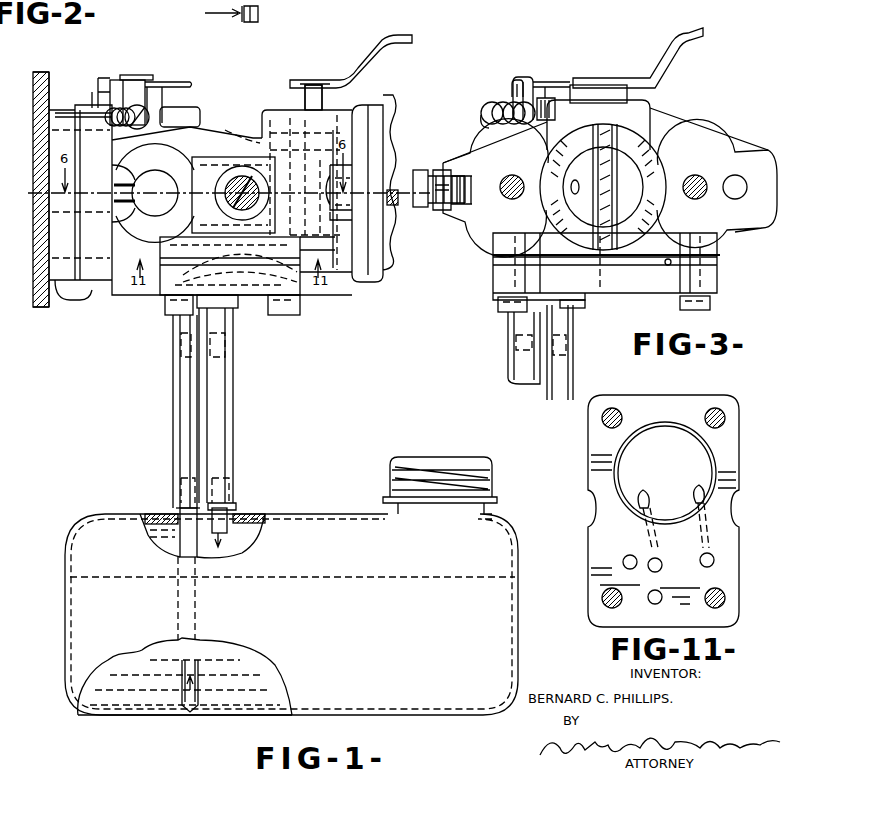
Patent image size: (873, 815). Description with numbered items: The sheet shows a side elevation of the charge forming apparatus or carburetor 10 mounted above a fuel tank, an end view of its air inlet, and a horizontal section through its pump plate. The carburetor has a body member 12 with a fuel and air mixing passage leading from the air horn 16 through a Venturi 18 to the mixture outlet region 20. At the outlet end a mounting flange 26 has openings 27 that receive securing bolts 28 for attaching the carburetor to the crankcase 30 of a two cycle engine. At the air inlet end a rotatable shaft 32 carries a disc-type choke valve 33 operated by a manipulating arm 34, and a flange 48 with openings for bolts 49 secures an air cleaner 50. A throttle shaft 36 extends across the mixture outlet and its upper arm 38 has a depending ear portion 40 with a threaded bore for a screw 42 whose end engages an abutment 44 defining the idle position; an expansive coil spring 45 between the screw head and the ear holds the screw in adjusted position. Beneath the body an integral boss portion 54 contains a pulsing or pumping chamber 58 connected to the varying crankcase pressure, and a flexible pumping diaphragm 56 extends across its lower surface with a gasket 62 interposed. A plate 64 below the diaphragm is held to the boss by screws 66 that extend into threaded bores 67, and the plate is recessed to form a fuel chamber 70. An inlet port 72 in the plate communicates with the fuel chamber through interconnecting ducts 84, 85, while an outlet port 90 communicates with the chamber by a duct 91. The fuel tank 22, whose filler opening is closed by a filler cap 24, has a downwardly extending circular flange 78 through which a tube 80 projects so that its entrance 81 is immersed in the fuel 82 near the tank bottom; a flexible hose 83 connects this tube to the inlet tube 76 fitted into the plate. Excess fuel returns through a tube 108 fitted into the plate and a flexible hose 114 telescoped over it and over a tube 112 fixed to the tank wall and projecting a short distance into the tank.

In FIG. 1, the charge forming apparatus or carburetor 10 is at (213, 126).
In FIG. 3, the charge forming apparatus or carburetor 10 is at (673, 98).
In FIG. 1, the body member 12 is at (268, 110).
In FIG. 3, the body member 12 is at (640, 100).
In FIG. 1, the air inlet portion or air horn 16 is at (298, 140).
In FIG. 1, the Venturi 18 is at (255, 135).
In FIG. 1, the mixture outlet region 20 is at (180, 117).
In FIG. 1, the fuel tank or receptacle 22 is at (325, 502).
In FIG. 1, the filler cap 24 is at (392, 462).
In FIG. 1, the mounting flange 26 is at (90, 300).
In FIG. 3, the mounting flange 26 is at (770, 160).
In FIG. 1, the openings 27 is at (110, 183).
In FIG. 3, the openings 27 is at (740, 196).
In FIG. 1, the securing bolts 28 is at (112, 212).
In FIG. 1, the crankcase 30 is at (33, 107).
In FIG. 1, the rotatable shaft 32 is at (325, 97).
In FIG. 3, the rotatable shaft 32 is at (572, 75).
In FIG. 3, the choke valve 33 is at (607, 190).
In FIG. 1, the manipulating arm or member 34 is at (375, 52).
In FIG. 3, the manipulating arm or member 34 is at (658, 56).
In FIG. 1, the throttle shaft 36 is at (135, 76).
In FIG. 1, the arm or member 38 is at (163, 82).
In FIG. 3, the arm or member 38 is at (520, 76).
In FIG. 1, the depending ear portion 40 is at (98, 86).
In FIG. 3, the depending ear portion 40 is at (512, 84).
In FIG. 1, the screw 42 is at (150, 118).
In FIG. 3, the screw 42 is at (485, 122).
In FIG. 3, the abutment 44 is at (546, 97).
In FIG. 1, the expansive coil spring 45 is at (108, 110).
In FIG. 3, the expansive coil spring 45 is at (490, 104).
In FIG. 1, the flange 48 is at (365, 143).
In FIG. 3, the flange 48 is at (660, 135).
In FIG. 1, the bolts 49 is at (395, 172).
In FIG. 3, the bolts 49 is at (700, 176).
In FIG. 1, the air cleaner or air filter 50 is at (392, 117).
In FIG. 1, the boss portion 54 is at (300, 238).
In FIG. 3, the boss portion 54 is at (718, 250).
In FIG. 1, the flexible pumping diaphragm 56 is at (250, 300).
In FIG. 3, the flexible pumping diaphragm 56 is at (717, 268).
In FIG. 1, the pulsing or pumping chamber 58 is at (252, 256).
In FIG. 3, the gasket 62 is at (668, 265).
In FIG. 1, the member or plate 64 is at (260, 300).
In FIG. 3, the member or plate 64 is at (717, 292).
In FIG. 11, the member or plate 64 is at (739, 450).
In FIG. 1, the screws 66 is at (300, 312).
In FIG. 3, the screws 66 is at (498, 305).
In FIG. 11, the screws 66 is at (605, 425).
In FIG. 3, the threaded bores 67 is at (700, 228).
In FIG. 1, the fuel chamber 70 is at (224, 280).
In FIG. 11, the fuel chamber 70 is at (612, 478).
In FIG. 11, the inlet port 72 is at (623, 562).
In FIG. 1, the inlet tube 76 is at (178, 349).
In FIG. 3, the inlet tube 76 is at (573, 339).
In FIG. 1, the downwardly extending circular flange 78 is at (150, 540).
In FIG. 1, the tube 80 is at (178, 505).
In FIG. 1, the entrance 81 is at (192, 712).
In FIG. 1, the fuel 82 is at (137, 720).
In FIG. 1, the flexible tubular means or hose 83 is at (172, 418).
In FIG. 3, the flexible tubular means or hose 83 is at (573, 363).
In FIG. 11, the duct 84 is at (648, 570).
In FIG. 11, the duct 85 is at (650, 530).
In FIG. 11, the outlet port 90 is at (713, 558).
In FIG. 11, the duct 91 is at (710, 514).
In FIG. 1, the tubular means or tube 108 is at (226, 345).
In FIG. 3, the tubular means or tube 108 is at (516, 346).
In FIG. 1, the tube 112 is at (236, 505).
In FIG. 1, the flexible hose or tube 114 is at (233, 424).
In FIG. 3, the flexible hose or tube 114 is at (508, 370).